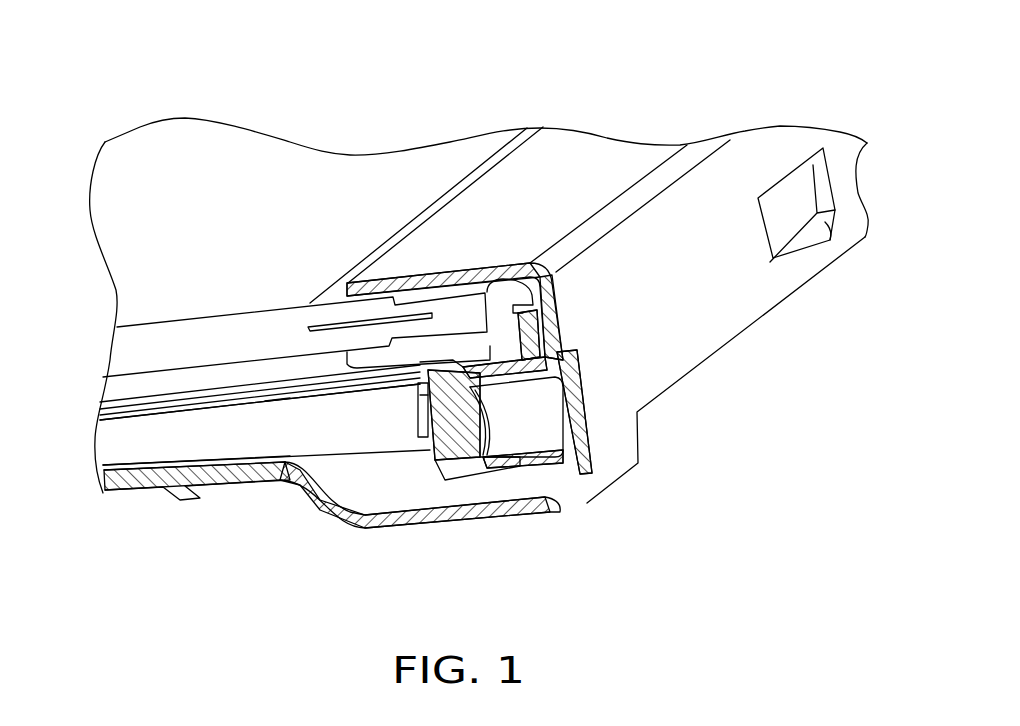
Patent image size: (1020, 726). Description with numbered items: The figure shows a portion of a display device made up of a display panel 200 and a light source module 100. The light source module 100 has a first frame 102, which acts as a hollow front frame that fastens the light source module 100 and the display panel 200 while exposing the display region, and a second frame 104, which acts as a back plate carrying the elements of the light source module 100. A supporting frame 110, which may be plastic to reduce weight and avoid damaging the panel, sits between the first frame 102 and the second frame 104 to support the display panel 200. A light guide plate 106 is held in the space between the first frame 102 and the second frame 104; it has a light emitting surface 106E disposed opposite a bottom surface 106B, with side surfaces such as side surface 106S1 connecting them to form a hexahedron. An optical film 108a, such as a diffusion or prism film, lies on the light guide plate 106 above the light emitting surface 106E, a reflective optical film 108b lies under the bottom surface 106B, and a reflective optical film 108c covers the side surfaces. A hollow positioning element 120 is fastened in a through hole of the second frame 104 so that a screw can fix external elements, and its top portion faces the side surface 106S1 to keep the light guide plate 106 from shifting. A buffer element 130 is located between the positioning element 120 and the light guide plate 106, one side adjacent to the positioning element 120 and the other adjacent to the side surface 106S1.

The light source module 100 is at (880, 143).
The first frame 102 is at (677, 340).
The second frame 104 is at (468, 523).
The light guide plate 106 is at (113, 442).
The bottom surface 106B is at (210, 460).
The light emitting surface 106E is at (278, 401).
The side surface 106S1 is at (423, 395).
The optical film 108a is at (84, 403).
The optical film 108b is at (103, 486).
The optical film 108c is at (425, 408).
The supporting frame 110 is at (510, 297).
The positioning element 120 is at (553, 468).
The buffer element 130 is at (452, 462).
The display panel 200 is at (180, 342).